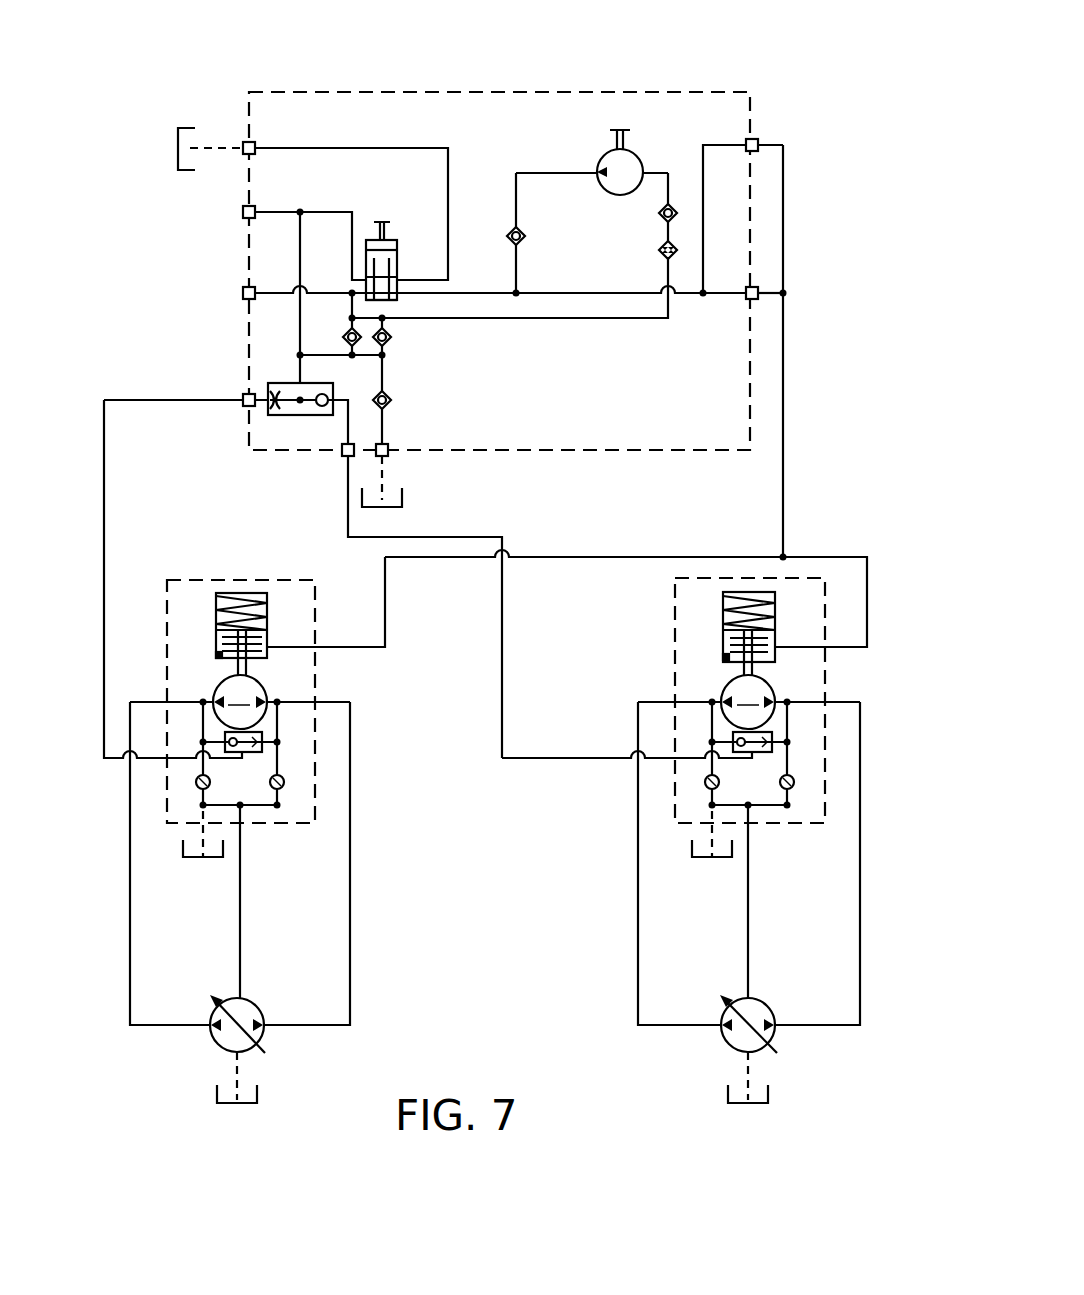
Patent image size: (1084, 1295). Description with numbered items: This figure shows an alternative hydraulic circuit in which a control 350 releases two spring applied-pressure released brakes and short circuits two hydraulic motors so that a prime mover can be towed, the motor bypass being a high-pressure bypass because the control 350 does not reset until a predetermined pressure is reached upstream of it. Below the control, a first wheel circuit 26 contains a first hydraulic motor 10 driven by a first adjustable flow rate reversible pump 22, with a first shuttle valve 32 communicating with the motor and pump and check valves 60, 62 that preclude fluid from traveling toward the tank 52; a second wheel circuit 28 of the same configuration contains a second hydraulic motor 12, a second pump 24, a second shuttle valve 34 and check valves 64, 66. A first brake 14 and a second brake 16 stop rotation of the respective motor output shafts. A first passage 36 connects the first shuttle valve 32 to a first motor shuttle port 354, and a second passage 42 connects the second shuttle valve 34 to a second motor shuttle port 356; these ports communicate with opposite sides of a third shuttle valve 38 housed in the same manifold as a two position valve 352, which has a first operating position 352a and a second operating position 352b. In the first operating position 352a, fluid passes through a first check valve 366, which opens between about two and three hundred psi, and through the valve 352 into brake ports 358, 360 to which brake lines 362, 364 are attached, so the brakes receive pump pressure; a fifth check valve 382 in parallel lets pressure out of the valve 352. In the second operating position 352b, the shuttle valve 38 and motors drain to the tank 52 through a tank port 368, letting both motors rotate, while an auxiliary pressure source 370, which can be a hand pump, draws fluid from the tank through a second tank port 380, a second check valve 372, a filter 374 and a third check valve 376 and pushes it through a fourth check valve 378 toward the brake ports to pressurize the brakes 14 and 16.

The control 350 is at (537, 58).
The tank 52 is at (176, 157).
The tank port 368 is at (240, 157).
The two position valve 352 is at (397, 232).
The first operating position 352a is at (397, 300).
The second operating position 352b is at (397, 255).
The auxiliary pressure source 370 is at (628, 162).
The fourth check valve 378 is at (525, 235).
The third check valve 376 is at (660, 215).
The filter 374 is at (665, 255).
The brake port 360 is at (760, 143).
The brake line 364 is at (785, 203).
The brake port 358 is at (762, 294).
The brake line 362 is at (765, 297).
The fifth check valve 382 is at (350, 344).
The first check valve 366 is at (388, 343).
The second check valve 372 is at (391, 403).
The second tank port 380 is at (392, 457).
The first motor shuttle port 354 is at (248, 394).
The third shuttle valve 38 is at (300, 416).
The second motor shuttle port 356 is at (345, 457).
The first passage 36 is at (107, 540).
The second passage 42 is at (548, 762).
The first spring applied-pressure released brake 14 is at (268, 645).
The second spring applied-pressure released brake 16 is at (772, 612).
The first hydraulic motor 10 is at (240, 702).
The second hydraulic motor 12 is at (748, 702).
The first shuttle valve 32 is at (252, 753).
The second shuttle valve 34 is at (765, 753).
The check valve 60 is at (285, 781).
The check valve 62 is at (199, 789).
The check valve 64 is at (795, 782).
The check valve 66 is at (707, 787).
The first wheel circuit 26 is at (366, 873).
The second wheel circuit 28 is at (620, 907).
The first adjustable flow rate reversible pump 22 is at (250, 1010).
The second adjustable flow rate reversible pump 24 is at (758, 1008).